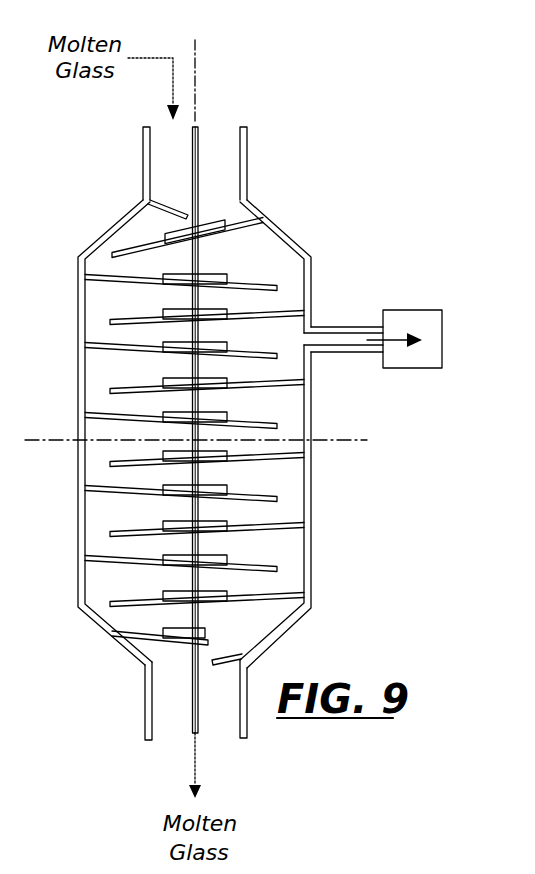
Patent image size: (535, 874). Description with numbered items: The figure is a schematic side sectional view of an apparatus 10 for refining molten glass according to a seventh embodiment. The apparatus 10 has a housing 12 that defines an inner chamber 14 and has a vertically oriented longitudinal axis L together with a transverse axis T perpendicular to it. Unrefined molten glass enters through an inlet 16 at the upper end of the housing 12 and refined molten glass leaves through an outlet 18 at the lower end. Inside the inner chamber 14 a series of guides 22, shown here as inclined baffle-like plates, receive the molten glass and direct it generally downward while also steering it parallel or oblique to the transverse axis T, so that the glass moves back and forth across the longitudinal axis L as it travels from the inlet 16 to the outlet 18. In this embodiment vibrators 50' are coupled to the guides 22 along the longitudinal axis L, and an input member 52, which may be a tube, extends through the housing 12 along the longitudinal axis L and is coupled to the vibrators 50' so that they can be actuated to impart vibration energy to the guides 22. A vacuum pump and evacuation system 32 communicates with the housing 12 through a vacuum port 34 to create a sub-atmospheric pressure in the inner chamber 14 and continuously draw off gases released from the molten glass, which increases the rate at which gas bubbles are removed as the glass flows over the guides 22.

The apparatus 10 is at (108, 134).
The housing 12 is at (178, 434).
The inner chamber 14 is at (260, 250).
The inlet 16 is at (220, 143).
The outlet 18 is at (217, 727).
The guides 22 is at (80, 432).
The vacuum pump and evacuation system 32 is at (417, 315).
The vacuum port 34 is at (343, 327).
The vibrators 50' is at (199, 432).
The input member 52 is at (163, 408).
The longitudinal axis L is at (197, 66).
The transverse axis T is at (352, 442).